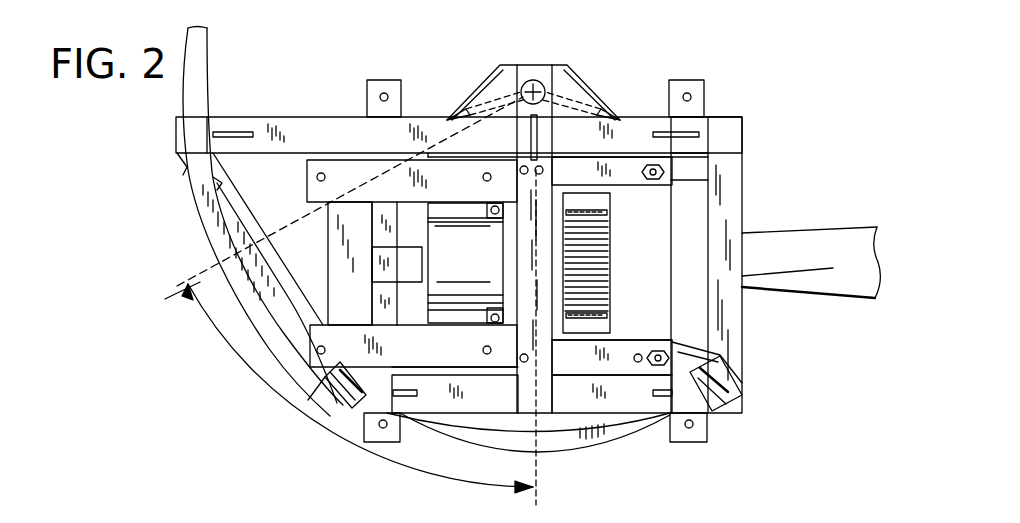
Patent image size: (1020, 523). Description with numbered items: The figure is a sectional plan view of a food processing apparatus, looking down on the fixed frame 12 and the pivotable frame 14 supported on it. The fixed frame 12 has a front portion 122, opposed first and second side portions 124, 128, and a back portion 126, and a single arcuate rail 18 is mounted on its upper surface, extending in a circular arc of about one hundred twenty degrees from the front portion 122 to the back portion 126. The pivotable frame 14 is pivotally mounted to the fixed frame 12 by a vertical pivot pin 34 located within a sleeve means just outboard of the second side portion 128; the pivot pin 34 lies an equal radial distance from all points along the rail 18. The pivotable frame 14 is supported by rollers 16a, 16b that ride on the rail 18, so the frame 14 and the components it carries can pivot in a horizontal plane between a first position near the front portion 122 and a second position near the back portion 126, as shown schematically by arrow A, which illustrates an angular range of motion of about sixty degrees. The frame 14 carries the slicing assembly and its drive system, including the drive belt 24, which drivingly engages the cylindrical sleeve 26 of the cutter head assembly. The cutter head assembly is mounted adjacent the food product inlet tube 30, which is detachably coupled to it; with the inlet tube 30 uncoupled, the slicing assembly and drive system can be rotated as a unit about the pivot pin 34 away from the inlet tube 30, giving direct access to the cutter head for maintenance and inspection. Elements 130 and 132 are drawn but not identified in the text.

The fixed frame 12 is at (289, 133).
The pivotable frame 14 is at (337, 170).
The roller 16a is at (340, 408).
The roller 16b is at (740, 397).
The arcuate rail 18 is at (193, 67).
The drive belt 24 is at (597, 214).
The cylindrical sleeve 26 is at (588, 255).
The food product inlet tube 30 is at (835, 250).
The vertical pivot pin 34 is at (532, 78).
The front portion 122 is at (710, 212).
The first side portion 124 is at (345, 400).
The back portion 126 is at (178, 160).
The second side portion 128 is at (434, 110).
The post 130 is at (363, 160).
The curved guide 132 is at (483, 415).
The arrow A is at (245, 360).